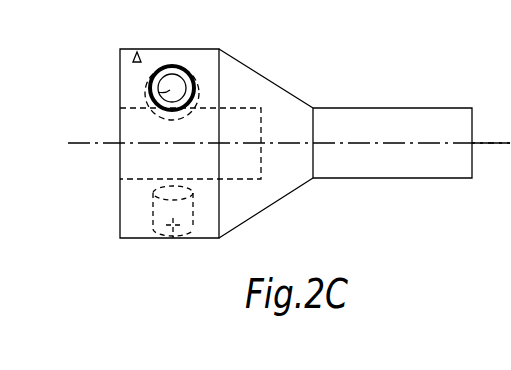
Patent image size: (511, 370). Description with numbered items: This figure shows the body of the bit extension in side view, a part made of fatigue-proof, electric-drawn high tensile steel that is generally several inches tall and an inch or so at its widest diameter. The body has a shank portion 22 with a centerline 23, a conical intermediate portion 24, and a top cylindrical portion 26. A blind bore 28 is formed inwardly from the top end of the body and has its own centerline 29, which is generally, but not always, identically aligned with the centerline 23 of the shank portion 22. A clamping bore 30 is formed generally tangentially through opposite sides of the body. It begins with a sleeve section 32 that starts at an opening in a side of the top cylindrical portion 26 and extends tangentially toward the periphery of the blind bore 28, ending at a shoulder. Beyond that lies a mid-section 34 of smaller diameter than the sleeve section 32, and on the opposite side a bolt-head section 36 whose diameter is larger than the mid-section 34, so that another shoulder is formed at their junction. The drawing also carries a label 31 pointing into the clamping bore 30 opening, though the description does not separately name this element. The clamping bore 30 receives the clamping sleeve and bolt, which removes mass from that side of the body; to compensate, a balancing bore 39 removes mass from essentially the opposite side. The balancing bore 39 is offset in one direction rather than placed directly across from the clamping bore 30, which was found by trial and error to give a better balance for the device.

The shank portion 22 is at (400, 108).
The centerline 23 is at (447, 143).
The intermediate portion 24 is at (280, 200).
The top cylindrical portion 26 is at (120, 238).
The blind bore 28 is at (137, 176).
The centerline 29 is at (83, 143).
The clamping bore 30 is at (157, 75).
The bore 31 is at (172, 82).
The sleeve section 32 is at (199, 90).
The mid-section 34 is at (158, 92).
The bolt-head section 36 is at (160, 68).
The balancing bore 39 is at (172, 238).